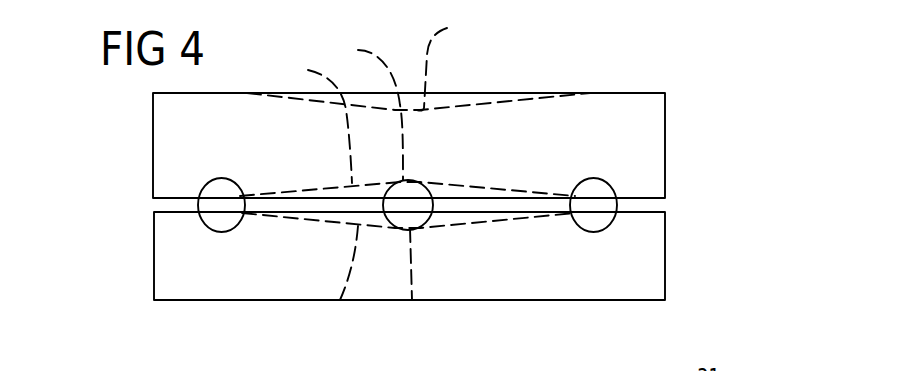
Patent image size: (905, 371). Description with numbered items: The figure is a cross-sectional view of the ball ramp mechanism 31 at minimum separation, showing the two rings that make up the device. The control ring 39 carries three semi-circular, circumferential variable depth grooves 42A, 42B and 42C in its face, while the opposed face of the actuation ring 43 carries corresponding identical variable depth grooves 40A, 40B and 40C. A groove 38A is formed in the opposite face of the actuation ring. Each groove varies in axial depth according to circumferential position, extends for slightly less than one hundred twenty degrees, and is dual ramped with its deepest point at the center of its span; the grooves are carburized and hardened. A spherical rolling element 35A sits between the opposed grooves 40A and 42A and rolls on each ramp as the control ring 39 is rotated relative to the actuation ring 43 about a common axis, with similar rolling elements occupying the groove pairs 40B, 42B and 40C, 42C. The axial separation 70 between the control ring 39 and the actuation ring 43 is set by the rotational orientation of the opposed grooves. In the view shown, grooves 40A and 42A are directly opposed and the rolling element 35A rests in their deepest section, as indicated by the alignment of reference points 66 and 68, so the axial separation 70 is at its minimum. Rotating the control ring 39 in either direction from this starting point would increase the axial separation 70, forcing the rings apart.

The ball ramp mechanism 31 is at (623, 73).
The axial separation 70 is at (120, 203).
The actuation ring 43 is at (648, 110).
The control ring 39 is at (655, 262).
The variable depth groove 40A is at (303, 120).
The variable depth groove 40B is at (603, 188).
The variable depth groove 40C is at (218, 186).
The variable depth groove 42A is at (340, 300).
The variable depth groove 42B is at (605, 218).
The variable depth groove 42C is at (213, 220).
The spherical rolling element 35A is at (425, 200).
The groove 38A is at (459, 62).
The reference point 68 is at (360, 108).
The reference point 66 is at (412, 300).